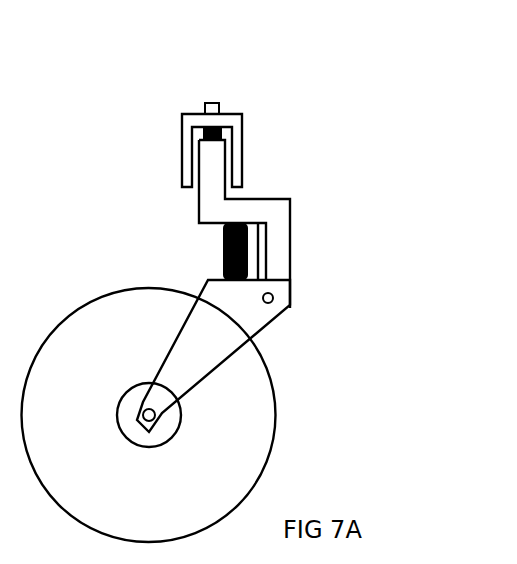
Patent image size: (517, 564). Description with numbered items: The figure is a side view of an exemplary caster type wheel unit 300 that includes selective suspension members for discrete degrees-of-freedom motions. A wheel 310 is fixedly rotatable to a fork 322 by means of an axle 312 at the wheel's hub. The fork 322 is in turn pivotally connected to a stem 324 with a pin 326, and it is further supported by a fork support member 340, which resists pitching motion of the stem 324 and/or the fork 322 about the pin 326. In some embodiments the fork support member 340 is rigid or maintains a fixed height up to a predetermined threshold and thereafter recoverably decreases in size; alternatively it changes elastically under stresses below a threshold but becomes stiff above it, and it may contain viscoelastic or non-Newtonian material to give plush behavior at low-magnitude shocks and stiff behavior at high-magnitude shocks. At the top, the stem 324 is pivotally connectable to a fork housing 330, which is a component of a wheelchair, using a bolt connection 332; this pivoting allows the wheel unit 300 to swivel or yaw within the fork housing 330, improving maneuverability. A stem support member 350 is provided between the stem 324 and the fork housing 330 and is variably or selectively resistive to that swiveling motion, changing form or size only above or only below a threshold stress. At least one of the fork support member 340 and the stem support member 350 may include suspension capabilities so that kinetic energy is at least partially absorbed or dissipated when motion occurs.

The caster type wheel unit 300 is at (387, 74).
The wheel 310 is at (255, 480).
The axle 312 is at (155, 417).
The fork 322 is at (516, 390).
The stem 324 is at (516, 182).
The pin 326 is at (273, 301).
The fork housing 330 is at (516, 115).
The bolt connection 332 is at (204, 105).
The fork support member 340 is at (223, 263).
The stem support member 350 is at (203, 132).